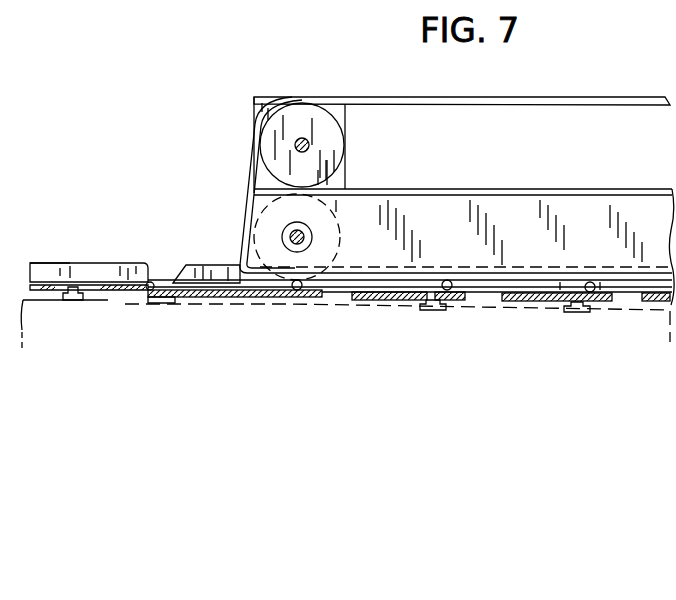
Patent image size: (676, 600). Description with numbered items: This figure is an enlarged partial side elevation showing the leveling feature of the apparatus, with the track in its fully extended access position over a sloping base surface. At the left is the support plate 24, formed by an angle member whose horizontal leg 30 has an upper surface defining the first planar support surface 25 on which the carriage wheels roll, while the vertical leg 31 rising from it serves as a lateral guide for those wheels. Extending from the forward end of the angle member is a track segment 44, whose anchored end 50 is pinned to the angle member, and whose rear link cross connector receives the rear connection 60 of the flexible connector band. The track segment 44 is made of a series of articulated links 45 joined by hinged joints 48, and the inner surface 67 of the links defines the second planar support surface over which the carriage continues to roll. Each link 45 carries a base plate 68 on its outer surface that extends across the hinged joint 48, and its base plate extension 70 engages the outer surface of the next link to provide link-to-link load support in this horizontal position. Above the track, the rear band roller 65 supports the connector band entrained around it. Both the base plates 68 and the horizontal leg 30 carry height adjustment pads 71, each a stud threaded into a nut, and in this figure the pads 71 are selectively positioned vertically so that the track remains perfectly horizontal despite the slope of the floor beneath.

The support plate 24 is at (35, 300).
The first planar support surface 25 is at (63, 263).
The horizontal leg 30 is at (94, 264).
The vertical leg 31 is at (138, 263).
The track segment 44 is at (403, 302).
The articulated link 45 is at (430, 282).
The hinged joint 48 is at (455, 306).
The anchored end 50 is at (195, 265).
The rear connection 60 is at (145, 304).
The rear band roller 65 is at (330, 125).
The inner surface 67 is at (233, 263).
The base plate 68 is at (358, 302).
The base plate extension 70 is at (305, 289).
The height adjustment pad 71 is at (578, 312).